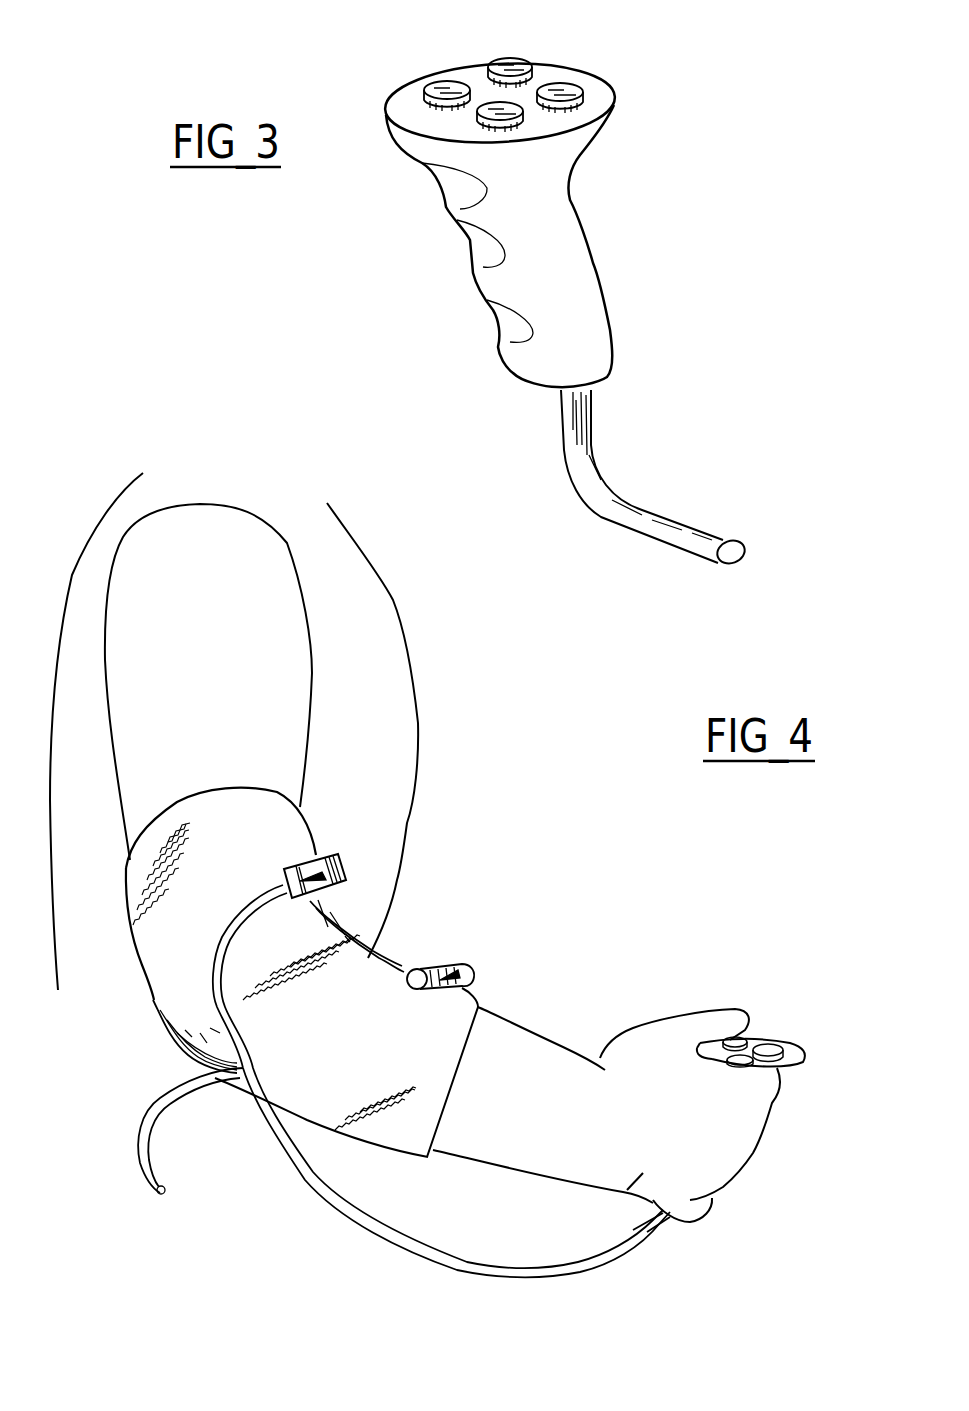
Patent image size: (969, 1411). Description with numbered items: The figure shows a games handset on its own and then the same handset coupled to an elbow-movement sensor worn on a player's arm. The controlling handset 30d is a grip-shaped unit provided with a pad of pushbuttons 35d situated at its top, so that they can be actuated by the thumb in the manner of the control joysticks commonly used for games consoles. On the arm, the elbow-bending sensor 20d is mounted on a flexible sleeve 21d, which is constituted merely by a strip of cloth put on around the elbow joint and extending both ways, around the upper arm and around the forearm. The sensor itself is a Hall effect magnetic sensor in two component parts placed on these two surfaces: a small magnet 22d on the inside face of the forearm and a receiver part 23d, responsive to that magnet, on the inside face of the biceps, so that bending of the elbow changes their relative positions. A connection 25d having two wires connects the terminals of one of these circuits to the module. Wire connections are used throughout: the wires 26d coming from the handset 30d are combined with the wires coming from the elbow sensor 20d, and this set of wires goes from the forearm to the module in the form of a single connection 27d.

In FIG. 4, the elbow-bending sensor 20d is at (428, 947).
In FIG. 4, the flexible sleeve 21d is at (158, 1013).
In FIG. 4, the magnet 22d is at (466, 966).
In FIG. 4, the receiver part 23d is at (318, 871).
In FIG. 4, the connection 25d is at (212, 1062).
In FIG. 4, the wires 26d is at (473, 1264).
In FIG. 4, the connection 27d is at (140, 1183).
In FIG. 3, the controlling handset 30d is at (633, 339).
In FIG. 4, the controlling handset 30d is at (800, 1079).
In FIG. 3, the pushbuttons 35d is at (558, 85).
In FIG. 4, the pushbuttons 35d is at (740, 1037).